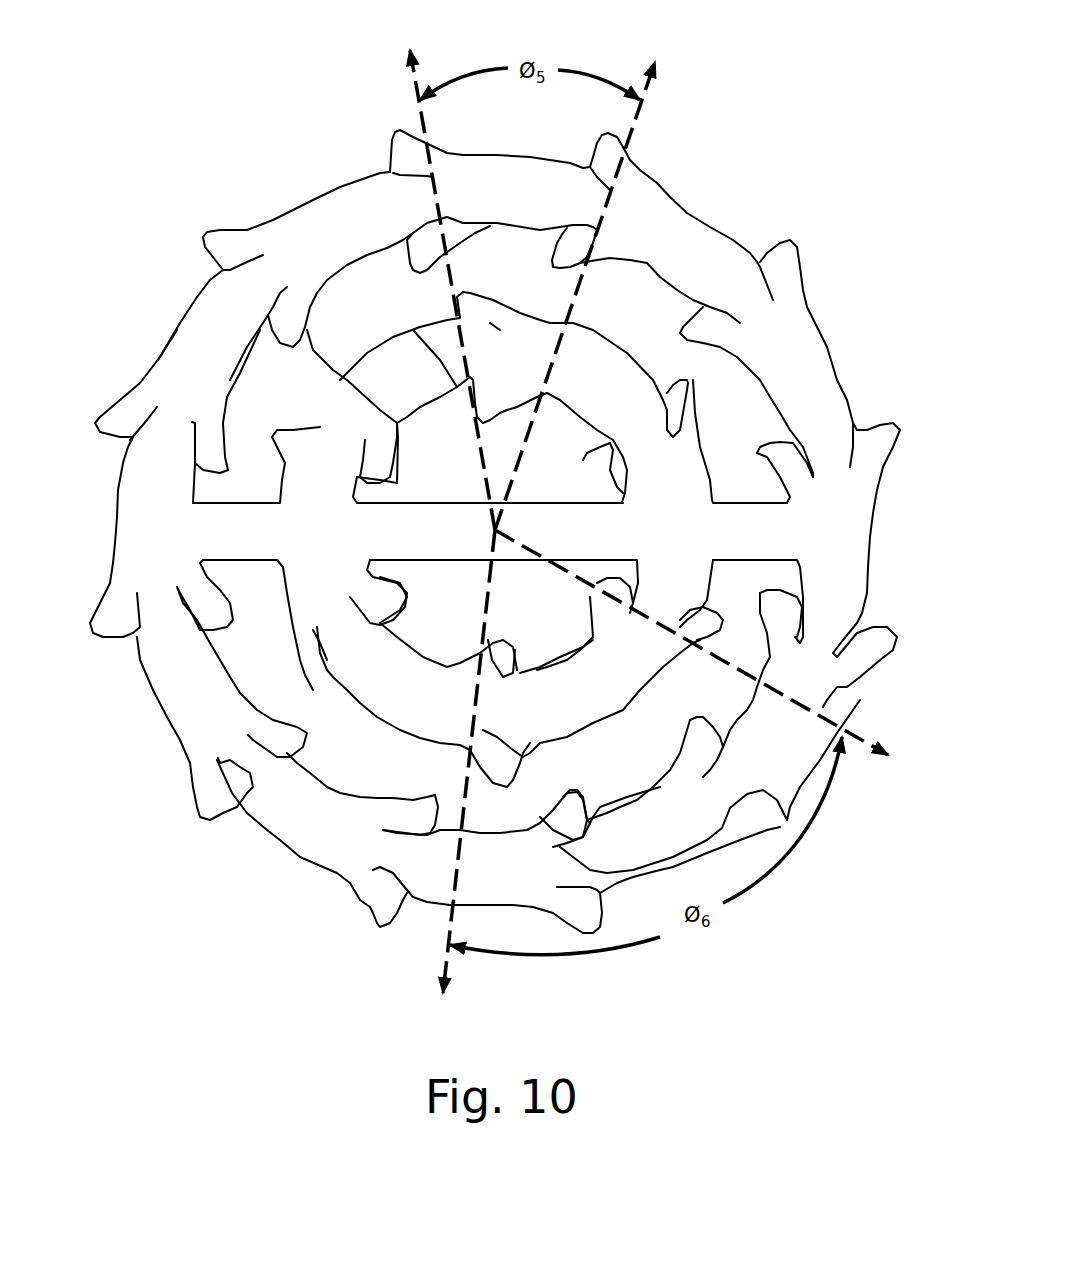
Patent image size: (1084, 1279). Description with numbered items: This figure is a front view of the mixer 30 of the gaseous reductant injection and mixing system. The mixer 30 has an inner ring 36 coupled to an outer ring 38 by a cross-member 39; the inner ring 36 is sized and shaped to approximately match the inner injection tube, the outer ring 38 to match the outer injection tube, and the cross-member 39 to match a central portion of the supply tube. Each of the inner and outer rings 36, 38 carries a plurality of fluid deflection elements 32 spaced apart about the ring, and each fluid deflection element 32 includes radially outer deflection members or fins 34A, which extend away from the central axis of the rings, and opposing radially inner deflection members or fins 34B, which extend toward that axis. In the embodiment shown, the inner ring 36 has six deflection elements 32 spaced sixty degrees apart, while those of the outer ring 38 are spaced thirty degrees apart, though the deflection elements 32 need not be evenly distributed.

The mixer 30 is at (292, 208).
The fluid deflection element 32 is at (400, 132).
The radially outer deflection member 34A is at (303, 647).
The radially inner deflection member 34B is at (367, 587).
The inner ring 36 is at (380, 373).
The outer ring 38 is at (767, 332).
The cross-member 39 is at (555, 512).